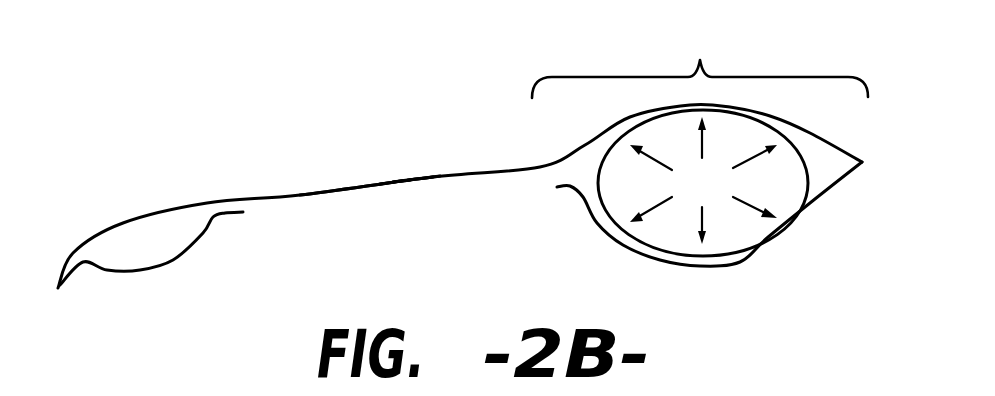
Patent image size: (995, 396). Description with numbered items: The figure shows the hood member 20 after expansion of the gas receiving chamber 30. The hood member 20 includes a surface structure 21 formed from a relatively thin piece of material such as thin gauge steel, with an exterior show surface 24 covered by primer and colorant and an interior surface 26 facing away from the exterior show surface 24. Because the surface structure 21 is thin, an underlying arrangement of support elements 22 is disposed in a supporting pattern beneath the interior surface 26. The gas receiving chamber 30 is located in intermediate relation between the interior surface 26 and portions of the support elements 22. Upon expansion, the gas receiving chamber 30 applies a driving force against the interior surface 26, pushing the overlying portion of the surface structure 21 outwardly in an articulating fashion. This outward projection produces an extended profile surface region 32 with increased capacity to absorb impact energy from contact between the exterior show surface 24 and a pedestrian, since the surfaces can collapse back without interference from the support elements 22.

The hood member 20 is at (163, 173).
The surface structure 21 is at (323, 190).
The support elements 22 is at (130, 273).
The exterior show surface 24 is at (433, 177).
The interior surface 26 is at (395, 180).
The gas receiving chamber 30 is at (809, 178).
The extended profile surface region 32 is at (700, 57).